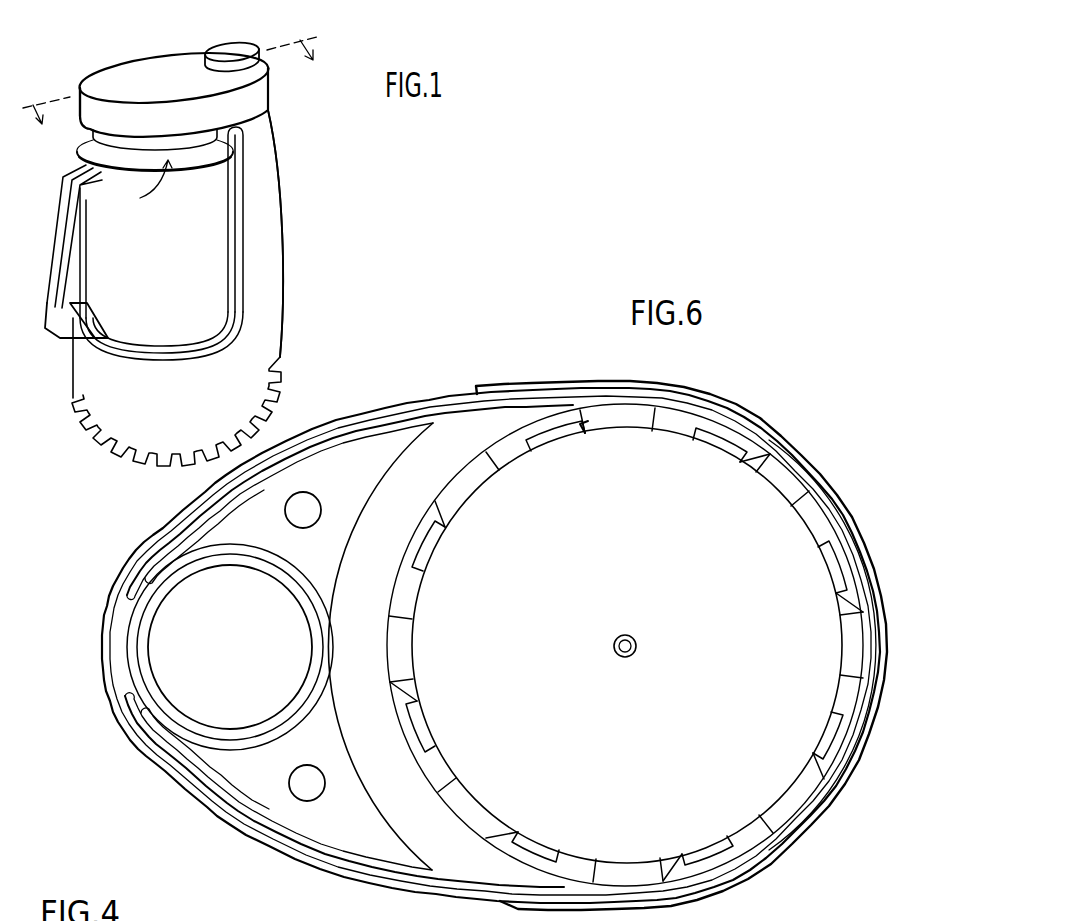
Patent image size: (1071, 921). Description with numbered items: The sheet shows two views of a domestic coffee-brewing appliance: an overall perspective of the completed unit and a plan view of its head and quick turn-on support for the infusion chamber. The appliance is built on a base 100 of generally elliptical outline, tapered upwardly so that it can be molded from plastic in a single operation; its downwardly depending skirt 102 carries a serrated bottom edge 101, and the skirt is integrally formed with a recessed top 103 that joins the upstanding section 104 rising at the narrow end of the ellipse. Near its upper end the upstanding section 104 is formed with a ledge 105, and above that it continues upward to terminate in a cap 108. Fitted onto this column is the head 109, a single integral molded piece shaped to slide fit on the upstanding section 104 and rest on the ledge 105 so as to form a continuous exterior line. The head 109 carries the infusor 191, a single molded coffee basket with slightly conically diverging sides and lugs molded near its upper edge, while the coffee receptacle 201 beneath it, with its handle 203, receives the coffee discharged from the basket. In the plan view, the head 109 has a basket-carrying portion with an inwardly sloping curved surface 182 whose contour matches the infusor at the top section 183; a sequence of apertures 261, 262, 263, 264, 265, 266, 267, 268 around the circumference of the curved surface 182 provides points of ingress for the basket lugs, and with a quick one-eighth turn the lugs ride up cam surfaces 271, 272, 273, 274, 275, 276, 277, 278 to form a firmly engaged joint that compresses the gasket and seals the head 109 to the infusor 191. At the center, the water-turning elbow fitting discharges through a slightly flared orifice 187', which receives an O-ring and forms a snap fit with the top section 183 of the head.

In FIG. 1, the base 100 is at (268, 322).
In FIG. 1, the serrated bottom edge 101 is at (253, 411).
In FIG. 1, the skirt 102 is at (95, 397).
In FIG. 1, the recessed top 103 is at (186, 360).
In FIG. 1, the upstanding section 104 is at (268, 226).
In FIG. 1, the ledge 105 is at (266, 133).
In FIG. 1, the cap 108 is at (266, 76).
In FIG. 1, the head 109 is at (255, 115).
In FIG. 1, the infusor 191 is at (138, 185).
In FIG. 1, the coffee receptacle 201 is at (169, 267).
In FIG. 1, the handle 203 is at (45, 290).
In FIG. 6, the curved surface 182 is at (408, 775).
In FIG. 6, the top section 183 is at (558, 604).
In FIG. 6, the orifice 187' is at (659, 633).
In FIG. 6, the aperture 261 is at (566, 448).
In FIG. 6, the aperture 262 is at (436, 556).
In FIG. 6, the aperture 263 is at (430, 733).
In FIG. 6, the aperture 264 is at (538, 845).
In FIG. 6, the aperture 265 is at (698, 856).
In FIG. 6, the aperture 266 is at (822, 732).
In FIG. 6, the aperture 267 is at (824, 567).
In FIG. 6, the aperture 268 is at (718, 446).
In FIG. 6, the cam surface 271 is at (585, 427).
In FIG. 6, the cam surface 272 is at (452, 518).
In FIG. 6, the cam surface 273 is at (426, 685).
In FIG. 6, the cam surface 274 is at (510, 824).
In FIG. 6, the cam surface 275 is at (670, 856).
In FIG. 6, the cam surface 276 is at (806, 767).
In FIG. 6, the cam surface 277 is at (834, 612).
In FIG. 6, the cam surface 278 is at (748, 462).